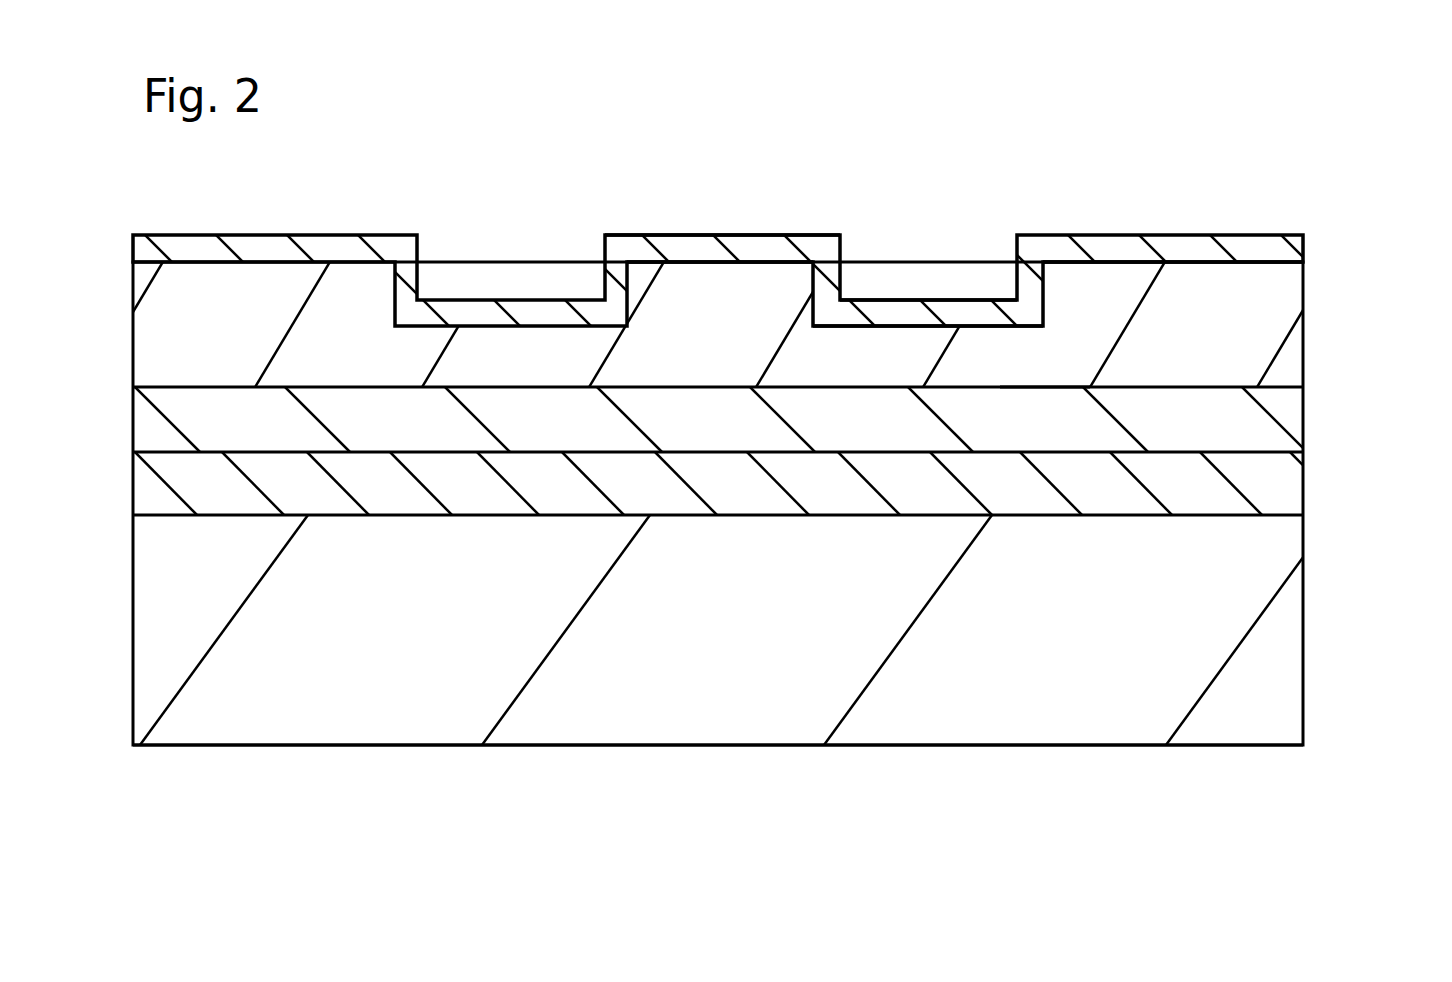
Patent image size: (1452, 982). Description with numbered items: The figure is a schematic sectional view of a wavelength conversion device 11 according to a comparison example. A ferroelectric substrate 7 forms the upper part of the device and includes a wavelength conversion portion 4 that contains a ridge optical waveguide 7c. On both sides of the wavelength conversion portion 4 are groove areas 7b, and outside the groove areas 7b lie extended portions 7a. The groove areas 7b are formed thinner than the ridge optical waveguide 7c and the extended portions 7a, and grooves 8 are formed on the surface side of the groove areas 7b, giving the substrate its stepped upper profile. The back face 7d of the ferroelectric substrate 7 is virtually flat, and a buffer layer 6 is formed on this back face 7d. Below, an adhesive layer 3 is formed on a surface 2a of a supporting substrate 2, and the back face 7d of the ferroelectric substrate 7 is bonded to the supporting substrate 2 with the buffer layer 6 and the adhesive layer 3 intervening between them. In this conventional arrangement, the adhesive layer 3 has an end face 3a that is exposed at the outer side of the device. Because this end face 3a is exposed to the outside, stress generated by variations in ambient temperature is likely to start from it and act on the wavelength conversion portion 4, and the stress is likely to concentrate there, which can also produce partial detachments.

The supporting substrate 2 is at (1300, 648).
The surface of the supporting substrate 2a is at (1303, 513).
The adhesive layer 3 is at (1290, 465).
The end face of the adhesive layer 3a is at (1303, 485).
The wavelength conversion portion 4 is at (837, 186).
The buffer layer 6 is at (1287, 408).
The ferroelectric substrate 7 is at (1315, 275).
The extended portions 7a is at (1197, 278).
The groove areas 7b is at (895, 340).
The ridge optical waveguide 7c is at (803, 262).
The back face of the ferroelectric substrate 7d is at (1040, 388).
The grooves 8 is at (974, 326).
The wavelength conversion device 11 is at (1343, 313).